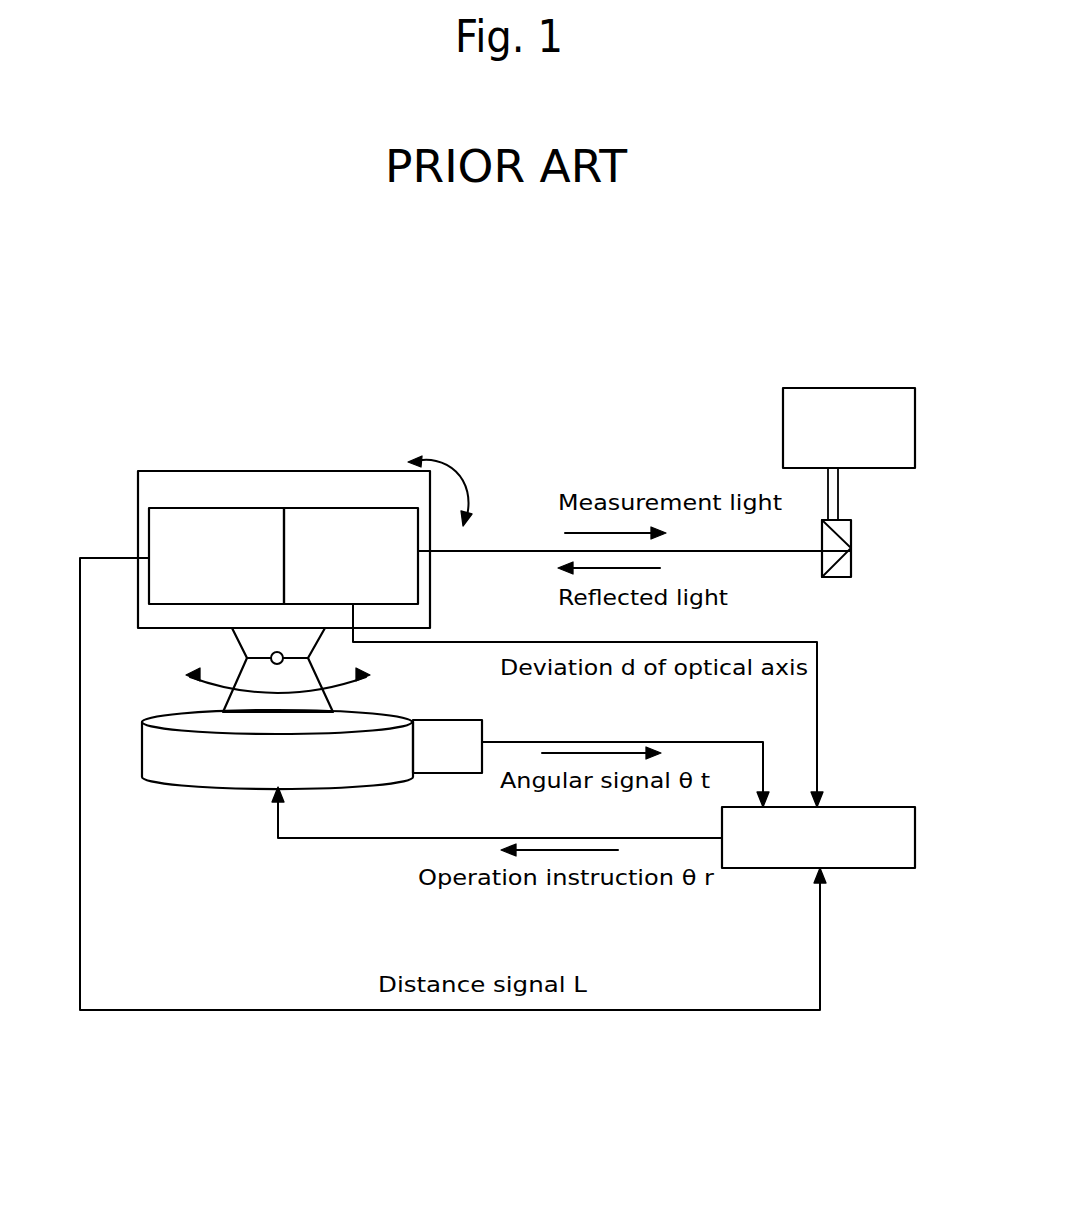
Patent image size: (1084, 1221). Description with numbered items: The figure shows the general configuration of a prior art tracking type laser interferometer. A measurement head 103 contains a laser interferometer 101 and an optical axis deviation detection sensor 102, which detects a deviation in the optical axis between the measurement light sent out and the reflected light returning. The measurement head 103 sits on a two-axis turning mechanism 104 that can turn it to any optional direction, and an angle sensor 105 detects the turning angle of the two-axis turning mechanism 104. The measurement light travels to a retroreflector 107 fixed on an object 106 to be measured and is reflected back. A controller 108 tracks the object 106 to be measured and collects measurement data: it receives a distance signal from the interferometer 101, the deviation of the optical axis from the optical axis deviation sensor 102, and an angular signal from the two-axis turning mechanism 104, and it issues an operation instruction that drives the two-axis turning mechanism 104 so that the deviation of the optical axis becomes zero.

The laser interferometer 101 is at (193, 508).
The optical axis deviation detection sensor 102 is at (345, 508).
The measurement head 103 is at (275, 471).
The two-axis turning mechanism 104 is at (170, 785).
The angle sensor 105 is at (440, 720).
The object to be measured 106 is at (827, 355).
The retroreflector 107 is at (851, 565).
The controller 108 is at (878, 775).